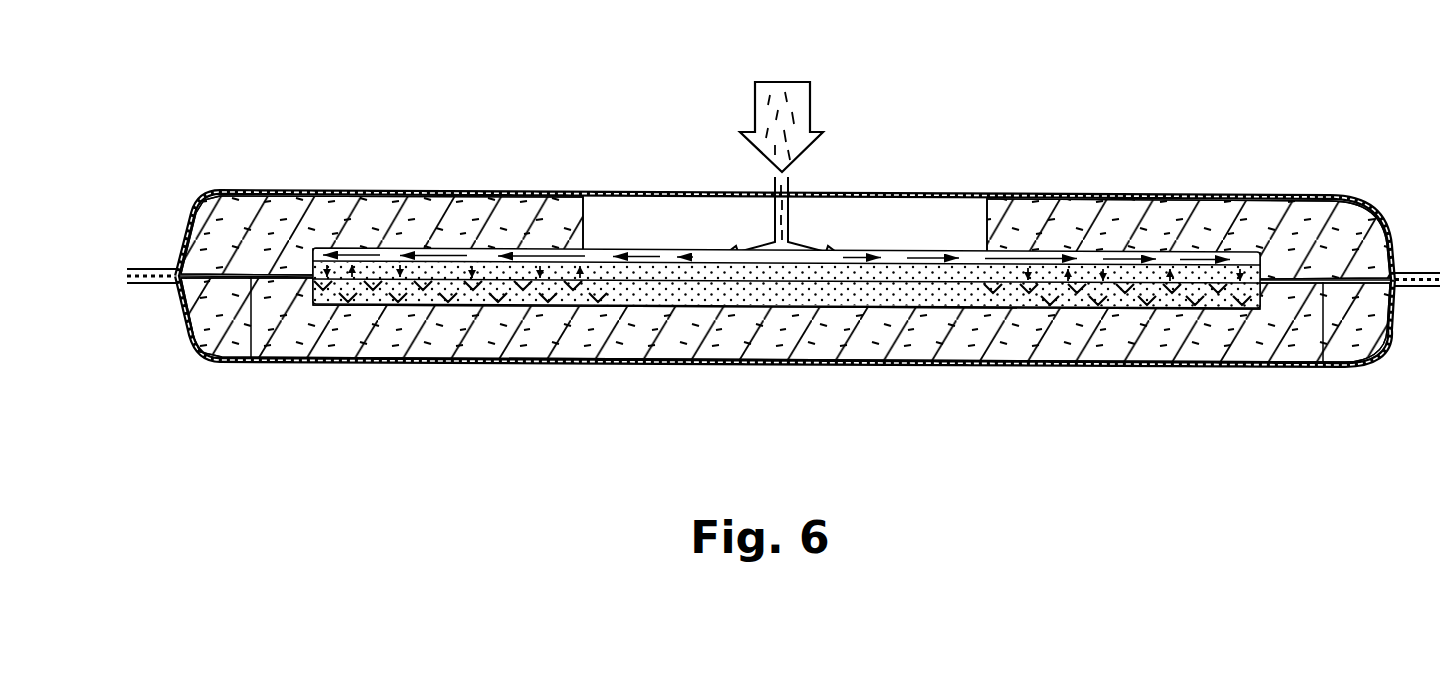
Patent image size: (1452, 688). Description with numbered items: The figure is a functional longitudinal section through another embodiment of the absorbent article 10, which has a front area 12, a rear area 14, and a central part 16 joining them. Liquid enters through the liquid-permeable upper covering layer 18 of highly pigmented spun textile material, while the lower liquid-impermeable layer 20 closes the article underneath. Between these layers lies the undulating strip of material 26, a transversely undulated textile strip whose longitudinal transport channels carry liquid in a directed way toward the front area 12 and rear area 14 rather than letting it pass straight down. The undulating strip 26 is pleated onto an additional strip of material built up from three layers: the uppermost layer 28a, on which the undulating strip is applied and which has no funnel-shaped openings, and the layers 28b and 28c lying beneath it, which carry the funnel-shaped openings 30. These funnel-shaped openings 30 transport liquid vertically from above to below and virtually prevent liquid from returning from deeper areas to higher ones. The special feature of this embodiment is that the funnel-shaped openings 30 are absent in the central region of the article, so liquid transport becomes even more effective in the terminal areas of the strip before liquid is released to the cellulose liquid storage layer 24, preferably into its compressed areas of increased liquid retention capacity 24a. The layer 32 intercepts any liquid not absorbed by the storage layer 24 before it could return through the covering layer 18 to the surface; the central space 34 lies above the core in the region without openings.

The absorbent article 10 is at (985, 90).
The front area 12 is at (238, 152).
The rear area 14 is at (1222, 153).
The central part 16 is at (628, 157).
The liquid-permeable upper covering layer 18 is at (1331, 197).
The lower liquid-impermeable layer 20 is at (1297, 369).
The liquid storage layer 24 is at (217, 343).
The areas of increased liquid retention capacity 24a is at (376, 357).
The undulating strip of material 26 is at (600, 270).
The uppermost layer of the additional strip of material 28a is at (600, 262).
The middle layer of the additional strip of material 28b is at (643, 288).
The lowermost layer of the additional strip of material 28c is at (688, 304).
The funnel-shaped openings 30 is at (457, 306).
The liquid intercepting layer 32 is at (435, 191).
The vapor space 34 is at (785, 224).